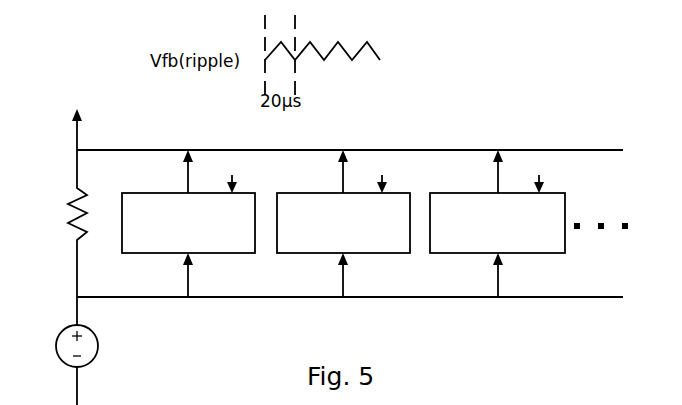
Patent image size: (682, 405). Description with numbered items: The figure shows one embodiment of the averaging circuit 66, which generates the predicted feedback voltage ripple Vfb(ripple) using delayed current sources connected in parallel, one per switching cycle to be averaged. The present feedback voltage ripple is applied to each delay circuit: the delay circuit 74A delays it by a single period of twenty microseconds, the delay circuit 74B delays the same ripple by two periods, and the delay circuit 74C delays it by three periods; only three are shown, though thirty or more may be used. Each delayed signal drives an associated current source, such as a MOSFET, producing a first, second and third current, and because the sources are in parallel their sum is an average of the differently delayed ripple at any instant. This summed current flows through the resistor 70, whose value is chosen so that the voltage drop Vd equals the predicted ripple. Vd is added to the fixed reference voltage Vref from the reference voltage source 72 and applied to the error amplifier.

The averaging circuit 66 is at (456, 101).
The resistor 70 is at (73, 240).
The reference voltage source 72 is at (56, 347).
The delay circuit 74A is at (224, 253).
The delay circuit 74B is at (385, 253).
The delay circuit 74C is at (523, 253).